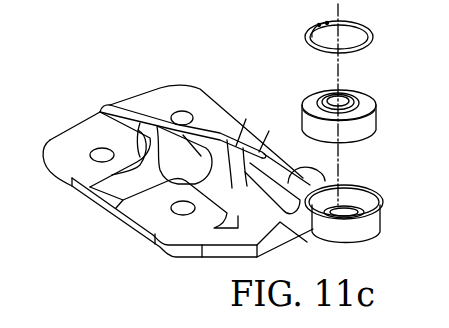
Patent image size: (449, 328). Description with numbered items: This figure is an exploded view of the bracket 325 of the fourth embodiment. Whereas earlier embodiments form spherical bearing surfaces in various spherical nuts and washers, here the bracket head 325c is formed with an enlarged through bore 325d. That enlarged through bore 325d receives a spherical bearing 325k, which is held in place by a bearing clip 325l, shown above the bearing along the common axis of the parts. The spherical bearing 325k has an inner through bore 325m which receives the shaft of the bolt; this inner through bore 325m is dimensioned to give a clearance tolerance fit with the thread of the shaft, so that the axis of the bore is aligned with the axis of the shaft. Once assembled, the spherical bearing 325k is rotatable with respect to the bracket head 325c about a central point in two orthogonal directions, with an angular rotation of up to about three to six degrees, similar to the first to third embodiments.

The bracket 325 is at (192, 84).
The bearing clip 325l is at (372, 37).
The inner through bore 325m is at (351, 101).
The spherical bearing 325k is at (373, 123).
The enlarged through bore 325d is at (381, 200).
The bracket head 325c is at (379, 217).